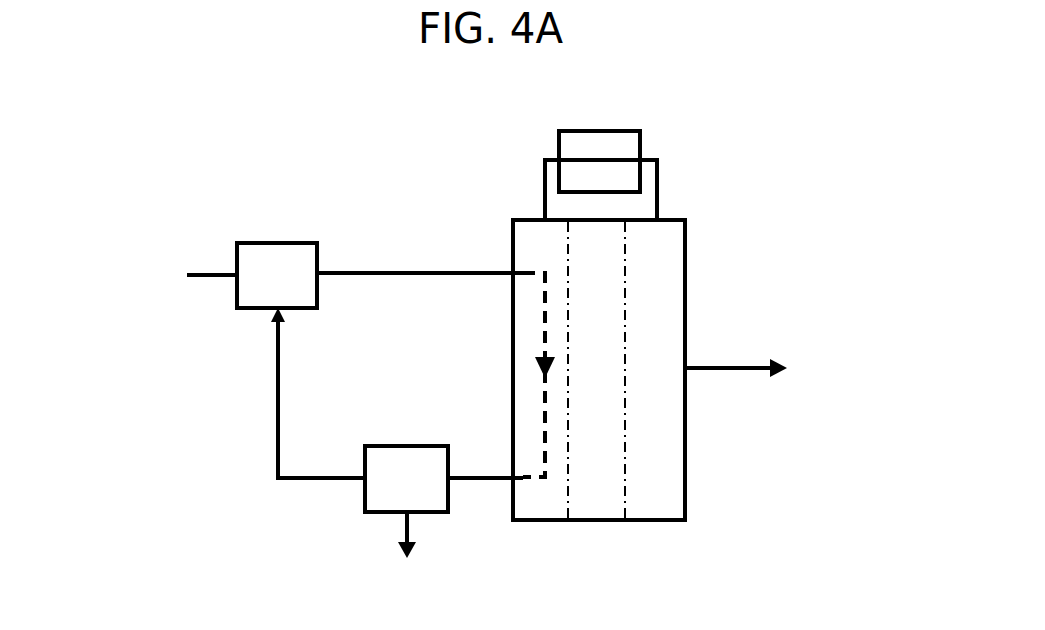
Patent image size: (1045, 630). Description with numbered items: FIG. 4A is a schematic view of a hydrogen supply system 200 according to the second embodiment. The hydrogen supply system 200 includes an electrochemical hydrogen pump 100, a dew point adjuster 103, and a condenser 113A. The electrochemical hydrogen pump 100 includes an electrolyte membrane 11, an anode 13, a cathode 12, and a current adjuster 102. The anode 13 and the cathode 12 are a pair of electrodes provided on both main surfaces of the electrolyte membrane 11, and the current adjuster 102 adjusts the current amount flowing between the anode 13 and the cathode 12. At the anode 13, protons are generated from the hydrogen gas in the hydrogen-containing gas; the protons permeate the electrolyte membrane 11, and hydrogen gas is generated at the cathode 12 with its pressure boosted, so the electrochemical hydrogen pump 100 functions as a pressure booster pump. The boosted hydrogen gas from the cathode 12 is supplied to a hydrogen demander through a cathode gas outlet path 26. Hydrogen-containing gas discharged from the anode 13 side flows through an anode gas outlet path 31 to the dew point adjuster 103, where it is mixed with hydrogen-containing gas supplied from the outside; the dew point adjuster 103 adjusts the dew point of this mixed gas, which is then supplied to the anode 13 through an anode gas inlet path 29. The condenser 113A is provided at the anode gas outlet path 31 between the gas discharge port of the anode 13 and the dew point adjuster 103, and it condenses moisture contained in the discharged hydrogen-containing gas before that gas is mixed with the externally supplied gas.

The hydrogen supply system 200 is at (453, 115).
The electrochemical hydrogen pump 100 is at (631, 316).
The current adjuster 102 is at (629, 178).
The dew point adjuster 103 is at (308, 295).
The condenser 113A is at (441, 495).
The anode gas inlet path 29 is at (402, 272).
The anode gas outlet path 31 is at (300, 480).
The cathode gas outlet path 26 is at (727, 365).
The anode 13 is at (563, 258).
The electrolyte membrane 11 is at (616, 258).
The cathode 12 is at (673, 258).